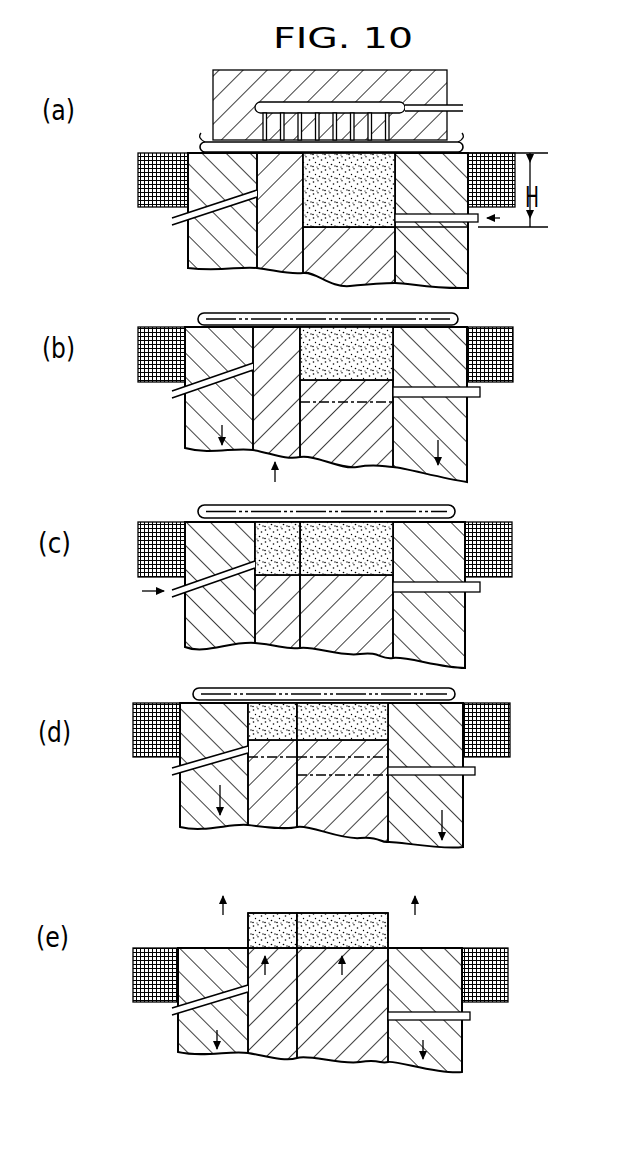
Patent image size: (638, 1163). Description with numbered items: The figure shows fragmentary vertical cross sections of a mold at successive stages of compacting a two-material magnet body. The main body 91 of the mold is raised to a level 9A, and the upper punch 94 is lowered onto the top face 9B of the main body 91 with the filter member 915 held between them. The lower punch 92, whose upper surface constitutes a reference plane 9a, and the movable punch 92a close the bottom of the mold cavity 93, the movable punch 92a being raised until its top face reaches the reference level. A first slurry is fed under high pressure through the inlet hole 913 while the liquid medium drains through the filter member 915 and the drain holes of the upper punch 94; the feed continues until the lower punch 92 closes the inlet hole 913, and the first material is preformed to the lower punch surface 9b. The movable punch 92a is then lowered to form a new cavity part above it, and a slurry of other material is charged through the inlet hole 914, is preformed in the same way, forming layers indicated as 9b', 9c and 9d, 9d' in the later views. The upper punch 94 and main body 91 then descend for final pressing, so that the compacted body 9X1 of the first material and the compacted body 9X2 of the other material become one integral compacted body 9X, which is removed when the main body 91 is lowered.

The main body 91 is at (457, 265).
The lower punch 92 is at (330, 267).
The movable punch 92a is at (267, 266).
The mold cavity 93 is at (315, 181).
The upper punch 94 is at (222, 78).
The inlet hole 913 is at (478, 224).
The inlet hole 914 is at (172, 222).
The filter member 915 is at (210, 141).
The level 9A is at (508, 141).
The top face 9B is at (456, 141).
The reference plane 9a is at (346, 225).
The lower punch surface 9b is at (345, 572).
The second powder layer side portion 9b' is at (274, 662).
The third powder layer 9c is at (270, 737).
The compacted body 9d is at (342, 1013).
The compacted body side portion 9d' is at (272, 1013).
The compacted body 9X is at (335, 883).
The compacted body 9X1 is at (363, 912).
The compacted body of other material 9X2 is at (267, 912).